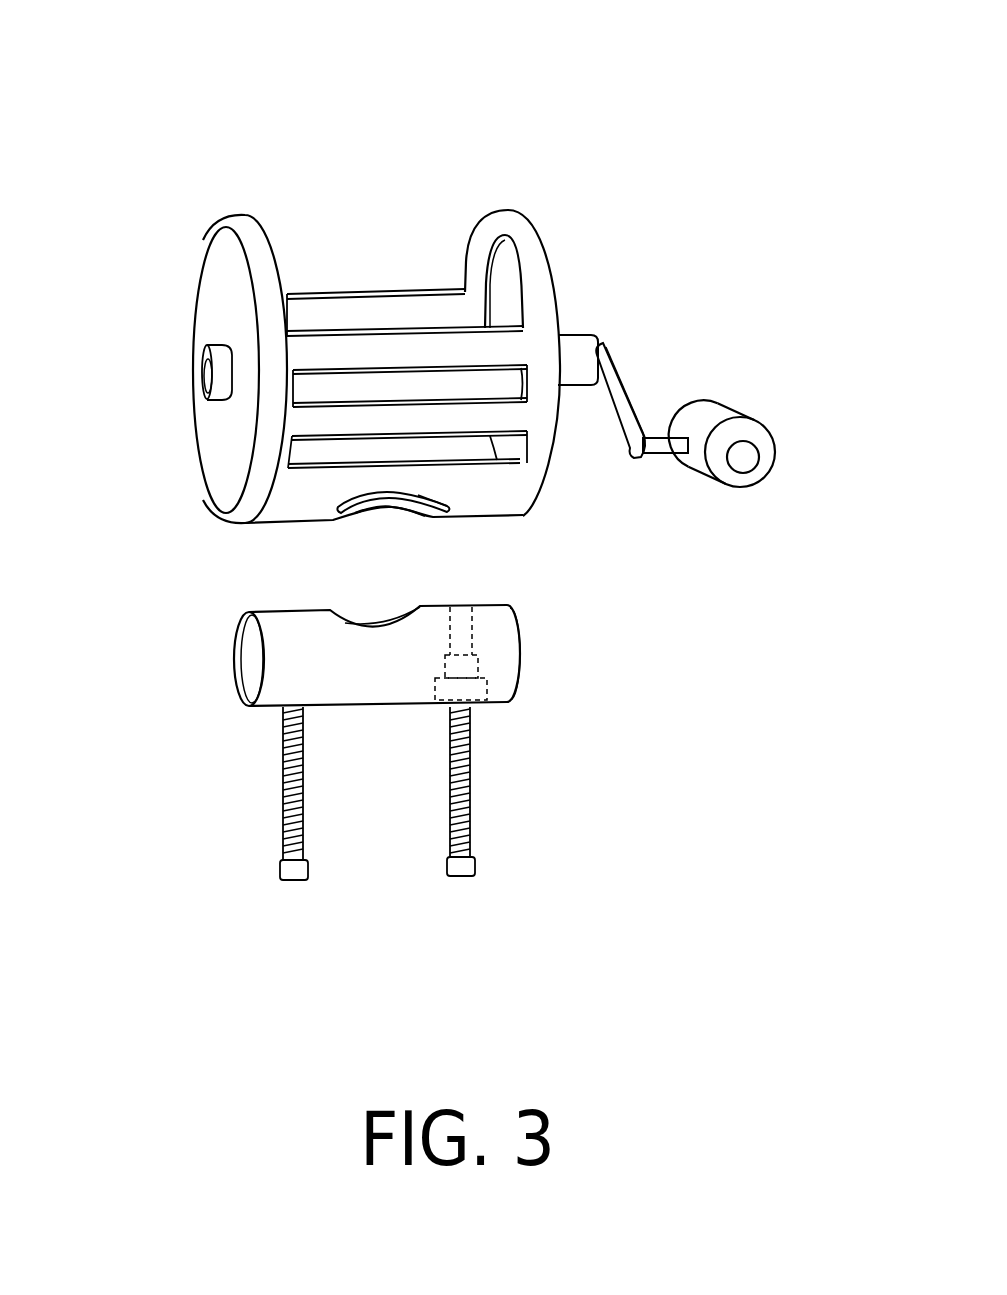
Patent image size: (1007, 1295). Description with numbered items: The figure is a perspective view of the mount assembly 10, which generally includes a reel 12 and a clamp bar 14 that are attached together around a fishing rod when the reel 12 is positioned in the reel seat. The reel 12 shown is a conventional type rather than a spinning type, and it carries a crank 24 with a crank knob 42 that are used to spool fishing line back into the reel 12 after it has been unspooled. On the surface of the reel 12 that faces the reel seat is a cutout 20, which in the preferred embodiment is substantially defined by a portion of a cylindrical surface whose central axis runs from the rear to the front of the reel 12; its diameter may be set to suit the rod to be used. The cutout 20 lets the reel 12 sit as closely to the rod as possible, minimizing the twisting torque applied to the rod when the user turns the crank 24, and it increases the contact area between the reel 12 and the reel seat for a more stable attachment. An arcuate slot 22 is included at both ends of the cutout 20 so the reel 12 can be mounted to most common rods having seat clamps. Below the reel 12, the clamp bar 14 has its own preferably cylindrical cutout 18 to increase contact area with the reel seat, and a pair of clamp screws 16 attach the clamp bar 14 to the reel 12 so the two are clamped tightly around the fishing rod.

The mount assembly 10 is at (482, 188).
The reel 12 is at (172, 303).
The clamp bar 14 is at (380, 786).
The clamp screws 16 is at (458, 837).
The cutout 18 is at (536, 706).
The cutout 20 is at (496, 565).
The arcuate slot 22 is at (261, 599).
The crank 24 is at (696, 331).
The crank knob 42 is at (768, 513).